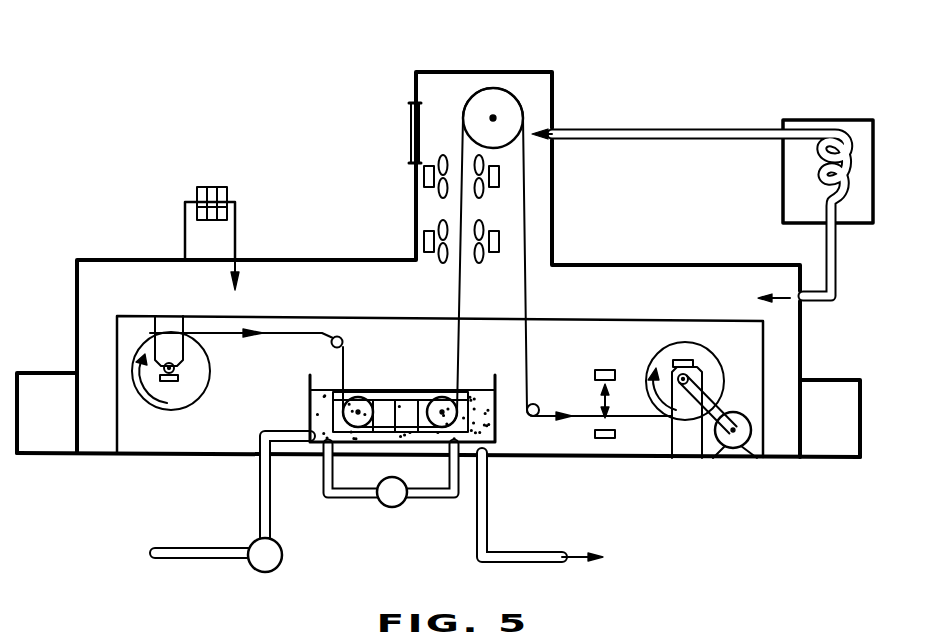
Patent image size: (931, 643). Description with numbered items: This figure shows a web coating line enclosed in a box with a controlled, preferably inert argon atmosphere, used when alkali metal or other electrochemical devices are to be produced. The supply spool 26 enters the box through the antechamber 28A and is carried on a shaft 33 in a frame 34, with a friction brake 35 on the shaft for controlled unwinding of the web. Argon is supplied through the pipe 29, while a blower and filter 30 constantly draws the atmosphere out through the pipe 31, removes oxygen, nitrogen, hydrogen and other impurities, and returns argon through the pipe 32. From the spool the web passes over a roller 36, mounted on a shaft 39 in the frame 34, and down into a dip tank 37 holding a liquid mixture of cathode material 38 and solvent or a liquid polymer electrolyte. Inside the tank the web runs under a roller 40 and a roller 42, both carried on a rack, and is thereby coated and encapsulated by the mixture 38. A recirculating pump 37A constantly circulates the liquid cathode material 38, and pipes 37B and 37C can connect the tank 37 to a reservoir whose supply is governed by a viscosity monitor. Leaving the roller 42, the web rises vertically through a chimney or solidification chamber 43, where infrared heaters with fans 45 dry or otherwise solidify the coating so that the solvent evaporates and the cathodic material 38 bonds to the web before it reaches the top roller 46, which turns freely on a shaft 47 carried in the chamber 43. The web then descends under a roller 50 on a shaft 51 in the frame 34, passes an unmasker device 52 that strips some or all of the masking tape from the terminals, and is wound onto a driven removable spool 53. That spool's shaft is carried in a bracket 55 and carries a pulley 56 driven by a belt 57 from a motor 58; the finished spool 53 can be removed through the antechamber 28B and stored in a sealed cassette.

The spool 26 is at (190, 385).
The antechamber 28A is at (43, 373).
The antechamber 28B is at (855, 380).
The pipe 29 is at (834, 245).
The blower and filter 30 is at (200, 177).
The pipe 31 is at (185, 232).
The pipe 32 is at (236, 222).
The shaft 33 is at (167, 397).
The frame 34 is at (137, 440).
The friction brake 35 is at (182, 378).
The roller 36 is at (341, 337).
The dip tank 37 is at (412, 379).
The recirculating pump 37A is at (386, 500).
The pipe 37B is at (241, 540).
The pipe 37C is at (522, 550).
The cathode material 38 is at (420, 440).
The shaft 39 is at (332, 345).
The roller 40 is at (348, 400).
The roller 42 is at (440, 400).
The solidification chamber 43 is at (507, 58).
The fans 45 is at (424, 176).
The top roller 46 is at (516, 110).
The shaft 47 is at (493, 118).
The roller 50 is at (540, 404).
The shaft 51 is at (528, 416).
The unmasker device 52 is at (590, 358).
The driven removable spool 53 is at (706, 360).
The bracket 55 is at (690, 435).
The pulley 56 is at (672, 405).
The belt 57 is at (745, 408).
The motor 58 is at (745, 442).